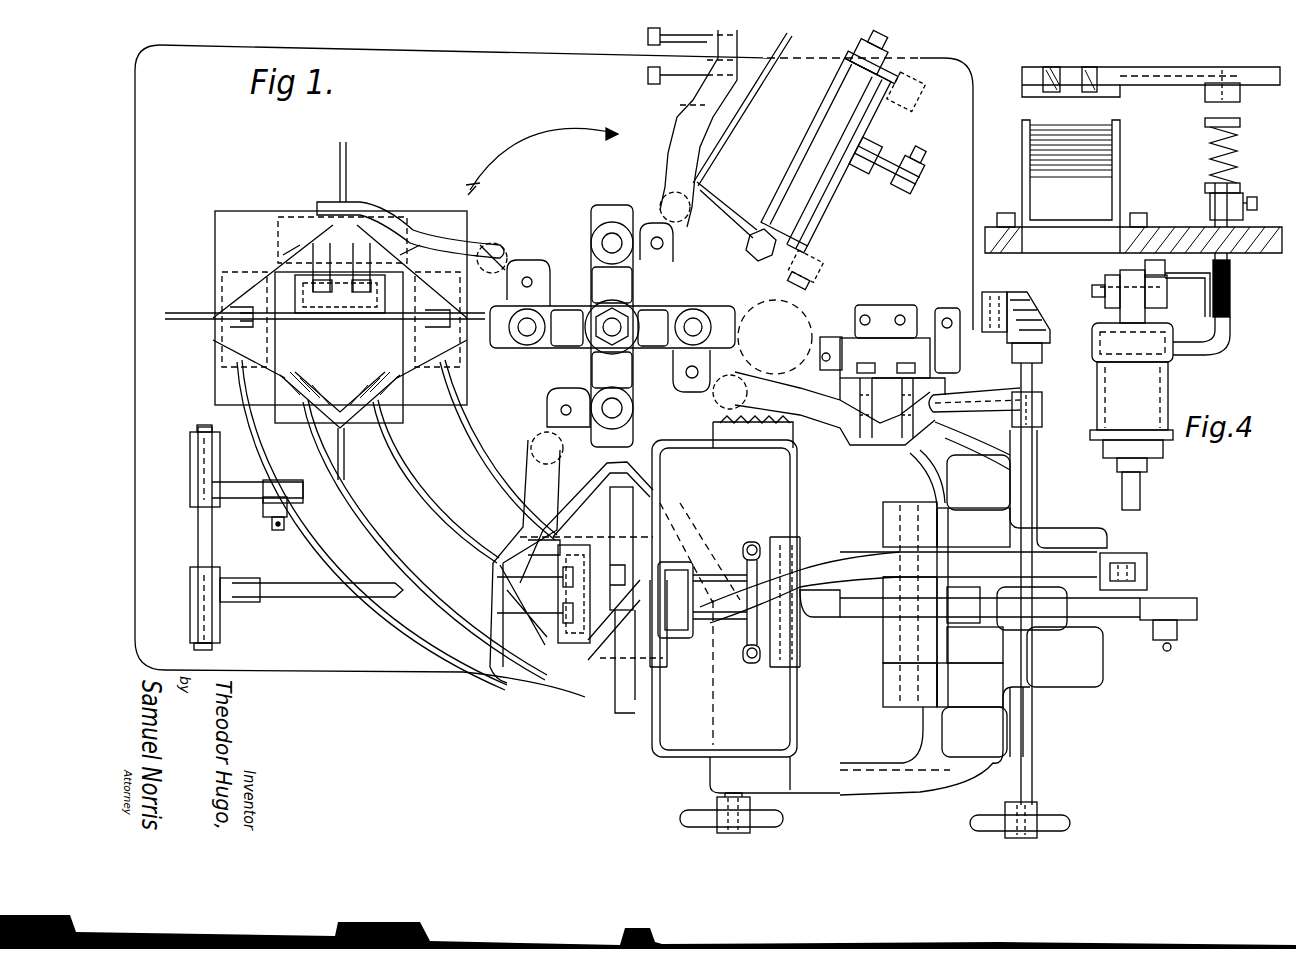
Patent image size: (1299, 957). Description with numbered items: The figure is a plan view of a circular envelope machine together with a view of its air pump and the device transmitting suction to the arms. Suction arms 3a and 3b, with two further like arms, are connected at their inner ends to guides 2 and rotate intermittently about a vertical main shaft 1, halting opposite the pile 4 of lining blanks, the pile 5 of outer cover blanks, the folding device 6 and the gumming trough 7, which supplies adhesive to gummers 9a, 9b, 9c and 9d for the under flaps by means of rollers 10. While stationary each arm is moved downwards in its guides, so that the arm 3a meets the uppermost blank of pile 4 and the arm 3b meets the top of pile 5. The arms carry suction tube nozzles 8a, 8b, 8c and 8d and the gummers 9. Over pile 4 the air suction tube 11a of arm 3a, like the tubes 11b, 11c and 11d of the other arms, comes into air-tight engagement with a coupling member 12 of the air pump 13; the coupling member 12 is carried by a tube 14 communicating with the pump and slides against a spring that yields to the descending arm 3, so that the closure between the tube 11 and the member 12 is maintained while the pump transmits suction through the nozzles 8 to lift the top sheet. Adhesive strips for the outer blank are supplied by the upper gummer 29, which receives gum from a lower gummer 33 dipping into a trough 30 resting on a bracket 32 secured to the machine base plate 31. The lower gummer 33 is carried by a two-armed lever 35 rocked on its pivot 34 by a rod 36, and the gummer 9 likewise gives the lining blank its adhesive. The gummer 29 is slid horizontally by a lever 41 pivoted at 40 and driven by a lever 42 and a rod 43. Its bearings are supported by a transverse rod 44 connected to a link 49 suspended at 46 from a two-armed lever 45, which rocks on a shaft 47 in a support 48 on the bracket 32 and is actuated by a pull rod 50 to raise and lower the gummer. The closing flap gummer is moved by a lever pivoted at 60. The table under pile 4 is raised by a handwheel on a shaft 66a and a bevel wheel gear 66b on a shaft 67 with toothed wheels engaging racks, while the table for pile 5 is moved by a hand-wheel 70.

In FIG. 1, the vertical main shaft 1 is at (640, 307).
In FIG. 1, the guides 2 is at (613, 243).
In FIG. 4, the suction arm 3 is at (1160, 77).
In FIG. 1, the suction arm 3a is at (673, 152).
In FIG. 1, the suction arm 3b is at (525, 515).
In FIG. 1, the pile of lining blanks 4 is at (860, 350).
In FIG. 4, the pile of lining blanks 4 is at (1070, 125).
In FIG. 1, the pile of outer cover blanks 5 is at (595, 680).
In FIG. 1, the folding device 6 is at (297, 355).
In FIG. 1, the gumming trough 7 is at (825, 173).
In FIG. 4, the suction tube nozzles 8 is at (1092, 67).
In FIG. 1, the suction tube nozzle 8a is at (935, 315).
In FIG. 1, the suction tube nozzle 8b is at (560, 650).
In FIG. 1, the suction tube nozzle 8c is at (390, 273).
In FIG. 1, the suction tube nozzle 8d is at (648, 75).
In FIG. 4, the gummer 9 is at (1037, 90).
In FIG. 1, the gummer 9a is at (940, 398).
In FIG. 1, the gummer 9b is at (505, 688).
In FIG. 1, the gummer 9c is at (287, 260).
In FIG. 1, the gummer 9d is at (680, 95).
In FIG. 1, the rollers 10 is at (887, 62).
In FIG. 4, the air suction tube 11 is at (1237, 93).
In FIG. 1, the air suction tube 11a is at (730, 392).
In FIG. 1, the air suction tube 11b is at (562, 410).
In FIG. 1, the air suction tube 11c is at (500, 265).
In FIG. 1, the air suction tube 11d is at (683, 227).
In FIG. 1, the coupling member 12 is at (750, 385).
In FIG. 4, the coupling member 12 is at (1237, 125).
In FIG. 1, the air pump 13 is at (800, 320).
In FIG. 4, the air pump 13 is at (1147, 402).
In FIG. 4, the tube 14 is at (1232, 290).
In FIG. 1, the upper gummer 29 is at (697, 675).
In FIG. 1, the gum trough 30 is at (765, 663).
In FIG. 1, the machine base plate 31 is at (554, 371).
In FIG. 4, the machine base plate 31 is at (1265, 237).
In FIG. 1, the bracket 32 is at (1097, 677).
In FIG. 1, the lower gummer 33 is at (703, 561).
In FIG. 1, the pivot 34 is at (973, 603).
In FIG. 1, the two-armed lever 35 is at (680, 640).
In FIG. 1, the rod 36 is at (1180, 630).
In FIG. 1, the pivot 40 is at (212, 541).
In FIG. 1, the lever 41 is at (232, 600).
In FIG. 1, the lever 42 is at (245, 485).
In FIG. 1, the rod 43 is at (290, 510).
In FIG. 1, the transverse rod 44 is at (625, 713).
In FIG. 1, the two-armed lever 45 is at (883, 567).
In FIG. 1, the suspension point 46 is at (600, 700).
In FIG. 1, the shaft 47 is at (890, 520).
In FIG. 1, the support 48 is at (950, 480).
In FIG. 1, the link 49 is at (665, 680).
In FIG. 1, the pull rod 50 is at (1147, 571).
In FIG. 1, the pivot 60 is at (1070, 823).
In FIG. 1, the shaft 66a is at (1037, 447).
In FIG. 1, the bevel wheel gear 66b is at (1015, 330).
In FIG. 1, the shaft 67 is at (995, 292).
In FIG. 1, the hand-wheel 70 is at (783, 820).